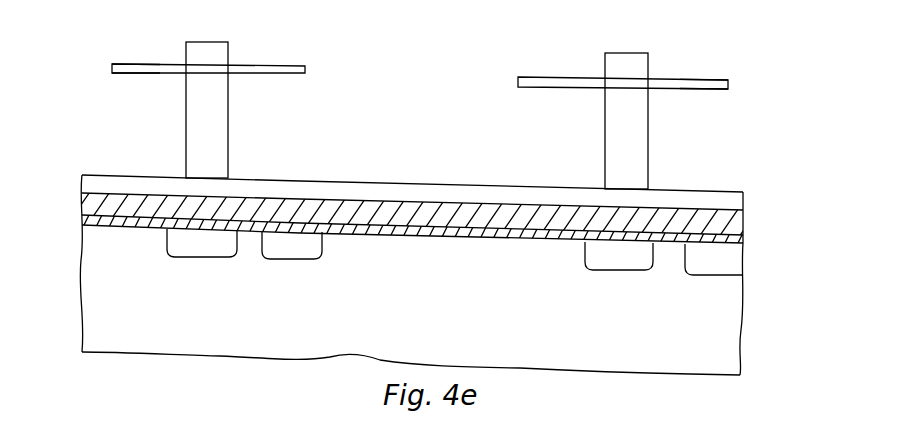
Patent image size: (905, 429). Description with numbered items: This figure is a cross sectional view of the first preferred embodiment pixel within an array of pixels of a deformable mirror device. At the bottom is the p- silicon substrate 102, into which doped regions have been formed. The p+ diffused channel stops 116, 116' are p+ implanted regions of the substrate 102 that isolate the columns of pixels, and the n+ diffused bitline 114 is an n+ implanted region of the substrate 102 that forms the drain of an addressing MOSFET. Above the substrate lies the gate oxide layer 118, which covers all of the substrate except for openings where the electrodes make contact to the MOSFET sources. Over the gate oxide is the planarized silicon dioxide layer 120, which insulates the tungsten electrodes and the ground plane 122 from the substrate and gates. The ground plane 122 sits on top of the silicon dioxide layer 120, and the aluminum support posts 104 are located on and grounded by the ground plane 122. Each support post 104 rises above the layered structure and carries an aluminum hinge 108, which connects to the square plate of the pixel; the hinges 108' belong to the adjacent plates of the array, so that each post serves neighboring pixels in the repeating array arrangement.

The p- silicon substrate 102 is at (462, 323).
The aluminum support post 104 is at (228, 52).
The aluminum hinge 108 is at (420, 99).
The hinge of adjacent plate 108' is at (413, 102).
The n+ diffused bitline 114 is at (274, 240).
The p+ diffused channel stop 116 is at (174, 198).
The p+ diffused channel stop 116' is at (593, 210).
The gate oxide layer 118 is at (745, 244).
The silicon dioxide layer 120 is at (743, 228).
The ground plane 122 is at (743, 192).